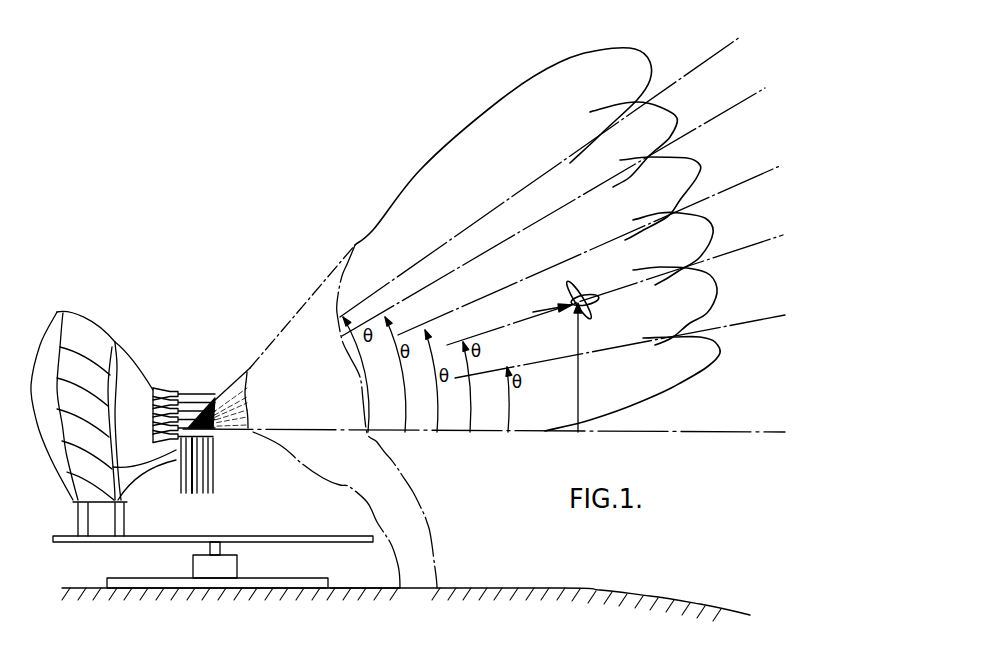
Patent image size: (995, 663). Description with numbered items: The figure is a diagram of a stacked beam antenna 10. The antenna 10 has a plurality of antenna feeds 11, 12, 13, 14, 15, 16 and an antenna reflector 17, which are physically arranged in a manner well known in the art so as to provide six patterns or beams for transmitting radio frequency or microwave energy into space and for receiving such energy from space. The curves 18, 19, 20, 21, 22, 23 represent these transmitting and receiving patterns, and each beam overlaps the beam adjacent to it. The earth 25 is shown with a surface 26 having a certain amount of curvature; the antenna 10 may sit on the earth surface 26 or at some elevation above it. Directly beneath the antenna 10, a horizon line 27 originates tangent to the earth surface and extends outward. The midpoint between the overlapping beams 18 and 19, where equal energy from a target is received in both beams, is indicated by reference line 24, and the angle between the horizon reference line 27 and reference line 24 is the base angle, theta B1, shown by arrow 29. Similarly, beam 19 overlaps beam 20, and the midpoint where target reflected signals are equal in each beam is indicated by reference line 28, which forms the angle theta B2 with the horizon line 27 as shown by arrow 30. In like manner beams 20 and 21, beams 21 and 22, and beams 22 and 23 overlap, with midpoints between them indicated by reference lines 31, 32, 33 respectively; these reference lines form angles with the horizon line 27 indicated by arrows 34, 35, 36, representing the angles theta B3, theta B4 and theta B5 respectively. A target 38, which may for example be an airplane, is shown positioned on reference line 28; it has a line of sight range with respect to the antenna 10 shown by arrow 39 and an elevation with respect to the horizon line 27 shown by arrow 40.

The antenna 10 is at (93, 320).
The antenna feed 11 is at (177, 477).
The antenna feed 12 is at (165, 502).
The antenna feed 13 is at (196, 485).
The antenna feed 14 is at (200, 472).
The antenna feed 15 is at (208, 455).
The antenna feed 16 is at (213, 443).
The antenna reflector 17 is at (57, 312).
The beam 18 is at (713, 367).
The beam 19 is at (715, 283).
The beam 20 is at (708, 222).
The beam 21 is at (698, 165).
The beam 22 is at (672, 108).
The beam 23 is at (626, 48).
The reference line 24 is at (745, 325).
The earth 25 is at (578, 596).
The earth surface 26 is at (352, 588).
The horizon reference line 27 is at (723, 434).
The reference line 28 is at (757, 247).
The arrow 29 is at (510, 420).
The arrow 30 is at (472, 412).
The reference line 31 is at (753, 177).
The reference line 32 is at (740, 103).
The reference line 33 is at (720, 40).
The arrow 34 is at (430, 337).
The arrow 35 is at (406, 416).
The arrow 36 is at (371, 408).
The target 38 is at (587, 290).
The arrow 39 is at (537, 311).
The arrow 40 is at (580, 376).
The base angle theta B1 is at (510, 412).
The angle theta B2 is at (472, 382).
The angle theta B3 is at (440, 412).
The angle theta B4 is at (402, 384).
The angle theta B5 is at (370, 368).